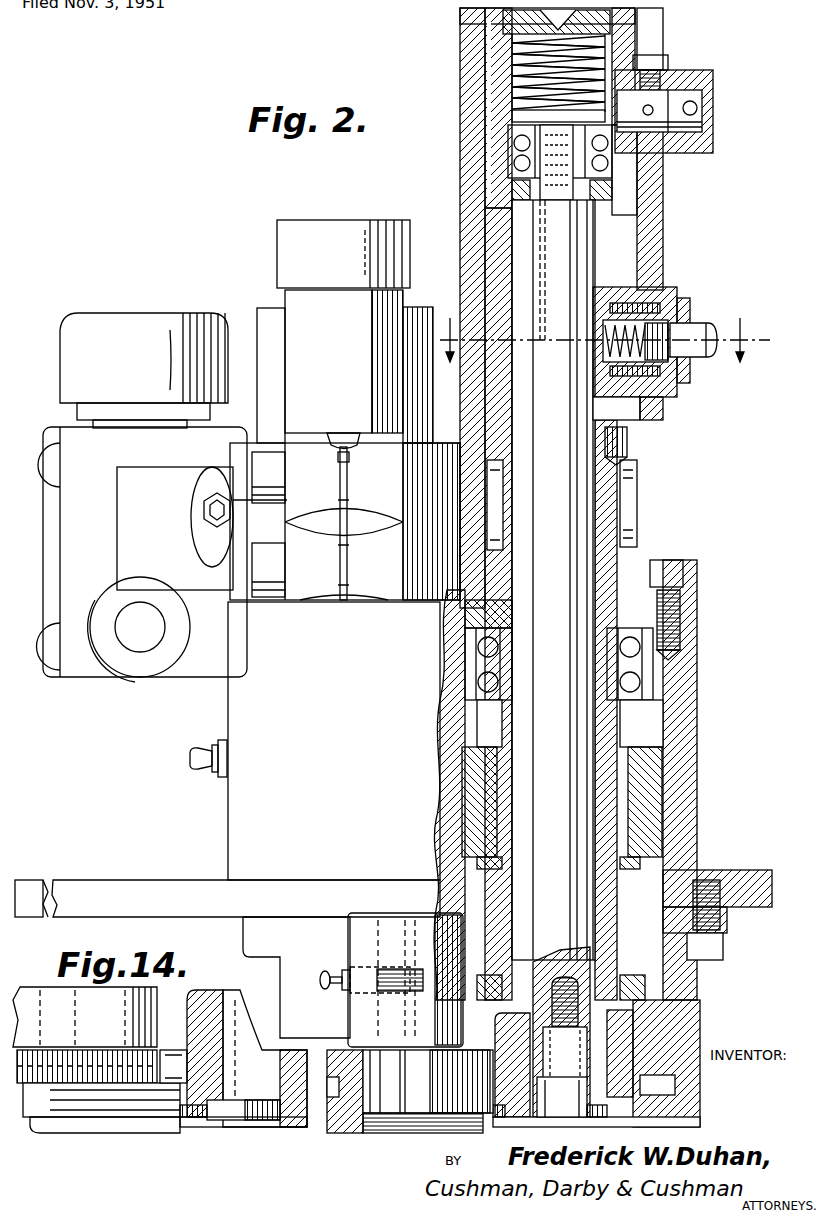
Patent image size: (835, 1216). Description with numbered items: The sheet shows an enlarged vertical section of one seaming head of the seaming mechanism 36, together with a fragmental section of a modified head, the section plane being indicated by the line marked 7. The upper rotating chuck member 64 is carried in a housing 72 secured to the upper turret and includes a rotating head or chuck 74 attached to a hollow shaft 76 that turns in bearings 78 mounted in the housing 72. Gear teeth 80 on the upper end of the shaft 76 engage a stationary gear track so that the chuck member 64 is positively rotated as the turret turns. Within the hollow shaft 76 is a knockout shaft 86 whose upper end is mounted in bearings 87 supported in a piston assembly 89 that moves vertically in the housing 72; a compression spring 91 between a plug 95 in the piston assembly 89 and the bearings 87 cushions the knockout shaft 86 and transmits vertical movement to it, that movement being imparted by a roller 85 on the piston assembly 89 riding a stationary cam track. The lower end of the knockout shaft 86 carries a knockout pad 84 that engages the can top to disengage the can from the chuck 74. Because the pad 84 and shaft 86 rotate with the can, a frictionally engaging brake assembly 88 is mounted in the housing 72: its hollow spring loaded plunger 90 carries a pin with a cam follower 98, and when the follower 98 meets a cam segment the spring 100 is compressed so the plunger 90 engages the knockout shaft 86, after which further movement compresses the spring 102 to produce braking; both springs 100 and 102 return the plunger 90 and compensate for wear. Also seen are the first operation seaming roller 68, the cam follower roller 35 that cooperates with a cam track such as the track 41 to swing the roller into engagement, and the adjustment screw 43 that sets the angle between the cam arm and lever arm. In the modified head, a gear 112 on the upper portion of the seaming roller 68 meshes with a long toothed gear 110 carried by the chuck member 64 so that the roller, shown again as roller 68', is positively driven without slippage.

In FIG. 2, the section line 7- 7 is at (602, 340).
In FIG. 2, the cam follower roller 35 is at (100, 325).
In FIG. 2, the seaming mechanism 36 is at (755, 831).
In FIG. 2, the cam track 41 is at (280, 243).
In FIG. 2, the adjustment screw 43 is at (222, 535).
In FIG. 2, the chuck member 64 is at (633, 1060).
In FIG. 14, the chuck member 64 is at (183, 1032).
In FIG. 2, the first operation seaming roller 68 is at (410, 1104).
In FIG. 14, the gear 68' is at (98, 1119).
In FIG. 2, the housing 72 is at (461, 158).
In FIG. 2, the rotating head or chuck 74 is at (495, 1117).
In FIG. 14, the rotating head or chuck 74 is at (179, 1117).
In FIG. 2, the hollow shaft 76 is at (625, 725).
In FIG. 2, the bearings 78 is at (656, 678).
In FIG. 2, the gear teeth 80 is at (637, 492).
In FIG. 2, the knockout pad 84 is at (536, 1117).
In FIG. 14, the knockout pad 84 is at (282, 1120).
In FIG. 2, the roller 85 is at (706, 78).
In FIG. 2, the knockout shaft 86 is at (597, 560).
In FIG. 2, the bearings 87 is at (612, 170).
In FIG. 2, the brake assembly 88 is at (691, 312).
In FIG. 2, the piston assembly 89 is at (632, 12).
In FIG. 2, the plunger 90 is at (588, 355).
In FIG. 2, the compression spring 91 is at (668, 60).
In FIG. 2, the plug 95 is at (642, 28).
In FIG. 2, the cam follower 98 is at (714, 325).
In FIG. 2, the spring 100 is at (592, 322).
In FIG. 2, the spring 102 is at (606, 388).
In FIG. 14, the gear 110 is at (176, 1086).
In FIG. 14, the gear 112 is at (23, 1087).